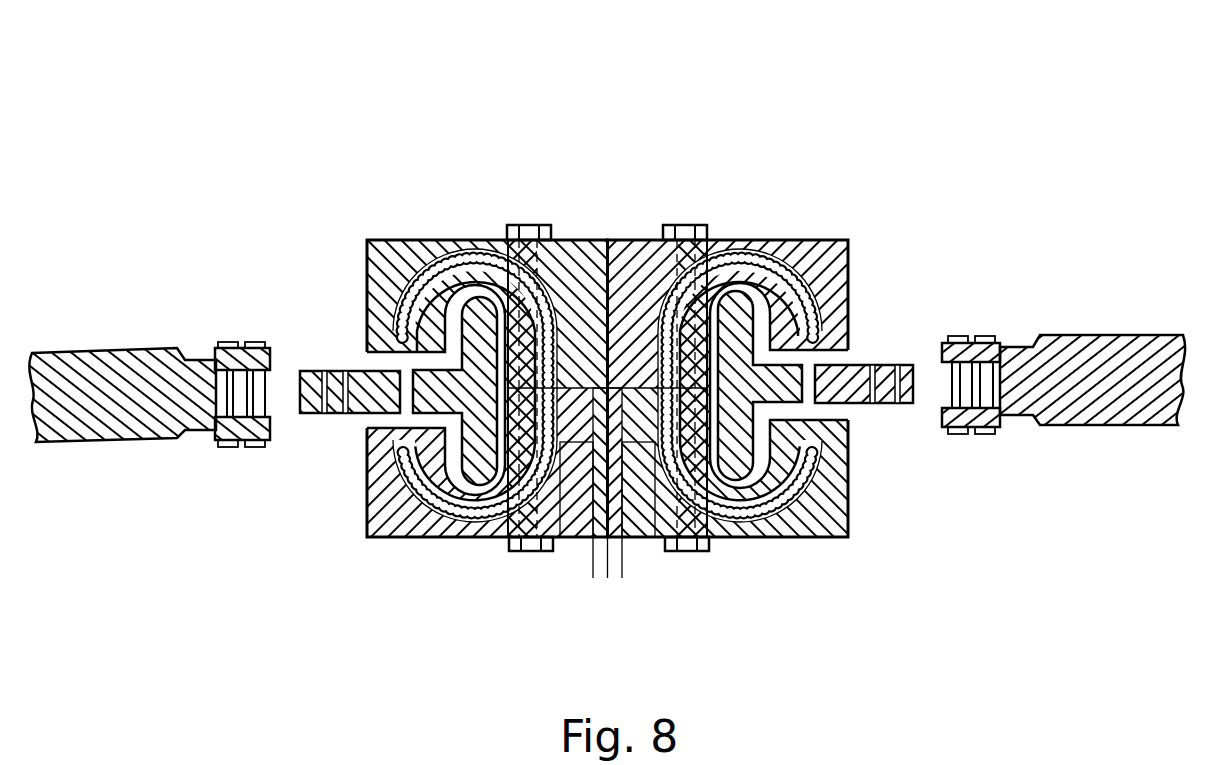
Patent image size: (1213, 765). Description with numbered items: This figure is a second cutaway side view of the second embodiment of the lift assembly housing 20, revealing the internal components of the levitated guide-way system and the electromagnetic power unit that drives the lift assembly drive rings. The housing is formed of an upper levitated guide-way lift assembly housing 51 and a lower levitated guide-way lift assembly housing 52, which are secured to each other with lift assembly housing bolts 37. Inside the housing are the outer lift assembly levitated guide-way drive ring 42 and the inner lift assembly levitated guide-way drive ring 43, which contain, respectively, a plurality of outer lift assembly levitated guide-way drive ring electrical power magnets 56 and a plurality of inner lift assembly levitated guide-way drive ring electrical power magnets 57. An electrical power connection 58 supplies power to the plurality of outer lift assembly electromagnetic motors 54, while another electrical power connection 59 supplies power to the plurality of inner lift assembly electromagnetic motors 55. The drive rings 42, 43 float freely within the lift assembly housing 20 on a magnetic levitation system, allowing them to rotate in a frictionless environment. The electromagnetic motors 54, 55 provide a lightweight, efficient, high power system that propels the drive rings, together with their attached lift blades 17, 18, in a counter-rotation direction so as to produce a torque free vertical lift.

The lift blade 17 is at (1087, 345).
The lift blade 18 is at (119, 358).
The lift assembly housing 20 is at (611, 333).
The lift assembly housing bolts 37 is at (523, 223).
The outer lift assembly levitated guide-way drive ring 42 is at (327, 371).
The inner lift assembly levitated guide-way drive ring 43 is at (882, 363).
The upper levitated guide-way lift assembly housing 51 is at (463, 387).
The lower levitated guide-way lift assembly housing 52 is at (774, 432).
The outer lift assembly electromagnetic motors 54 is at (443, 527).
The inner lift assembly electromagnetic motors 55 is at (753, 532).
The outer lift assembly levitated guide-way drive ring electrical power magnets 56 is at (397, 395).
The inner lift assembly levitated guide-way drive ring electrical power magnets 57 is at (857, 403).
The electrical power connection 58 is at (593, 565).
The electrical power connection 59 is at (623, 565).